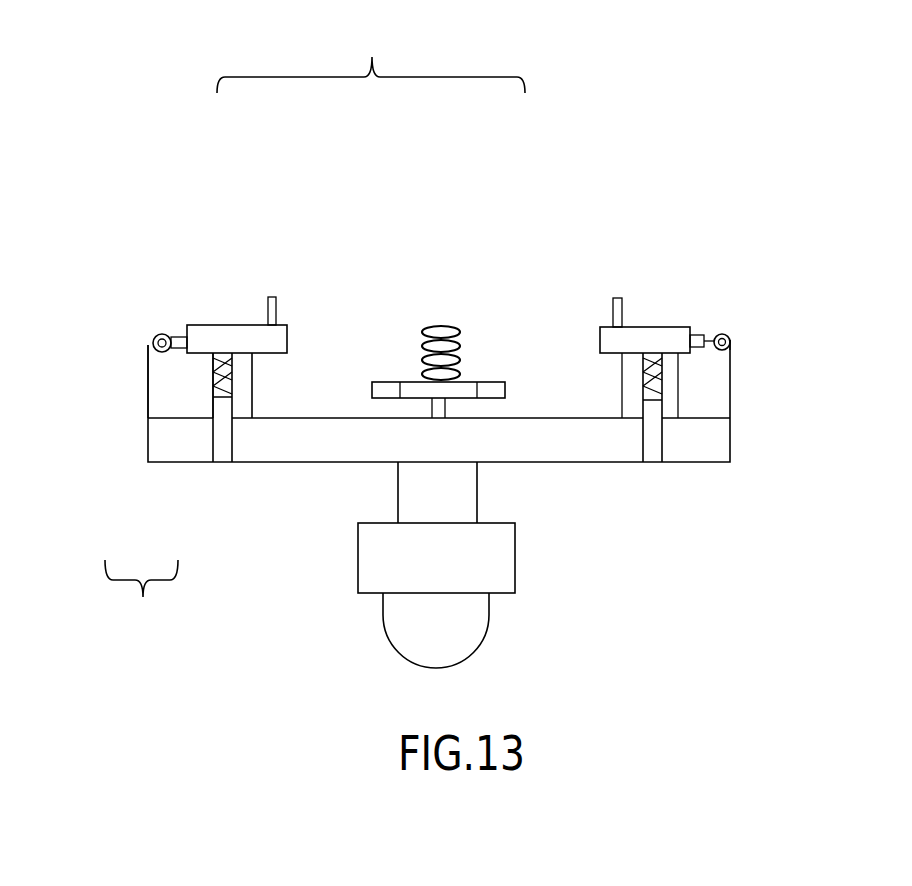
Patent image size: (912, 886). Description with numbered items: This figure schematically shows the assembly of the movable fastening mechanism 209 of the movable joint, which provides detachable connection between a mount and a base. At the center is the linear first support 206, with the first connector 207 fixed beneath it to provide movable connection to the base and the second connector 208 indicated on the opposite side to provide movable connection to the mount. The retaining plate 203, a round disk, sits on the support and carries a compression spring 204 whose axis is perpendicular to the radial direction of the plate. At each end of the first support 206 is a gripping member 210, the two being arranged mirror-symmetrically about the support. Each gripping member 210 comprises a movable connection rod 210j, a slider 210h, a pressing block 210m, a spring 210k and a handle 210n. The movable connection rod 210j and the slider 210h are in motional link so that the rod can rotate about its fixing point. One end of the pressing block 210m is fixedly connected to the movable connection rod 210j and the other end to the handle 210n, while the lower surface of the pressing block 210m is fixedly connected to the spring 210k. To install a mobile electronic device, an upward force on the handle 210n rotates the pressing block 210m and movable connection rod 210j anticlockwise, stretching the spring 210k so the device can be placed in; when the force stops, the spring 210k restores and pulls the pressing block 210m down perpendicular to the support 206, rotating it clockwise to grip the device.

The retaining plate 203 is at (393, 410).
The compression spring 204 is at (422, 348).
The first support 206 is at (523, 445).
The first connector 207 is at (468, 558).
The second connector 208 is at (141, 598).
The fastening mechanism 209 is at (371, 52).
The gripping member 210 is at (350, 175).
The slider 210h is at (176, 392).
The movable connection rod 210j is at (165, 334).
The spring 210k is at (225, 373).
The pressing block 210m is at (238, 337).
The handle 210n is at (272, 296).